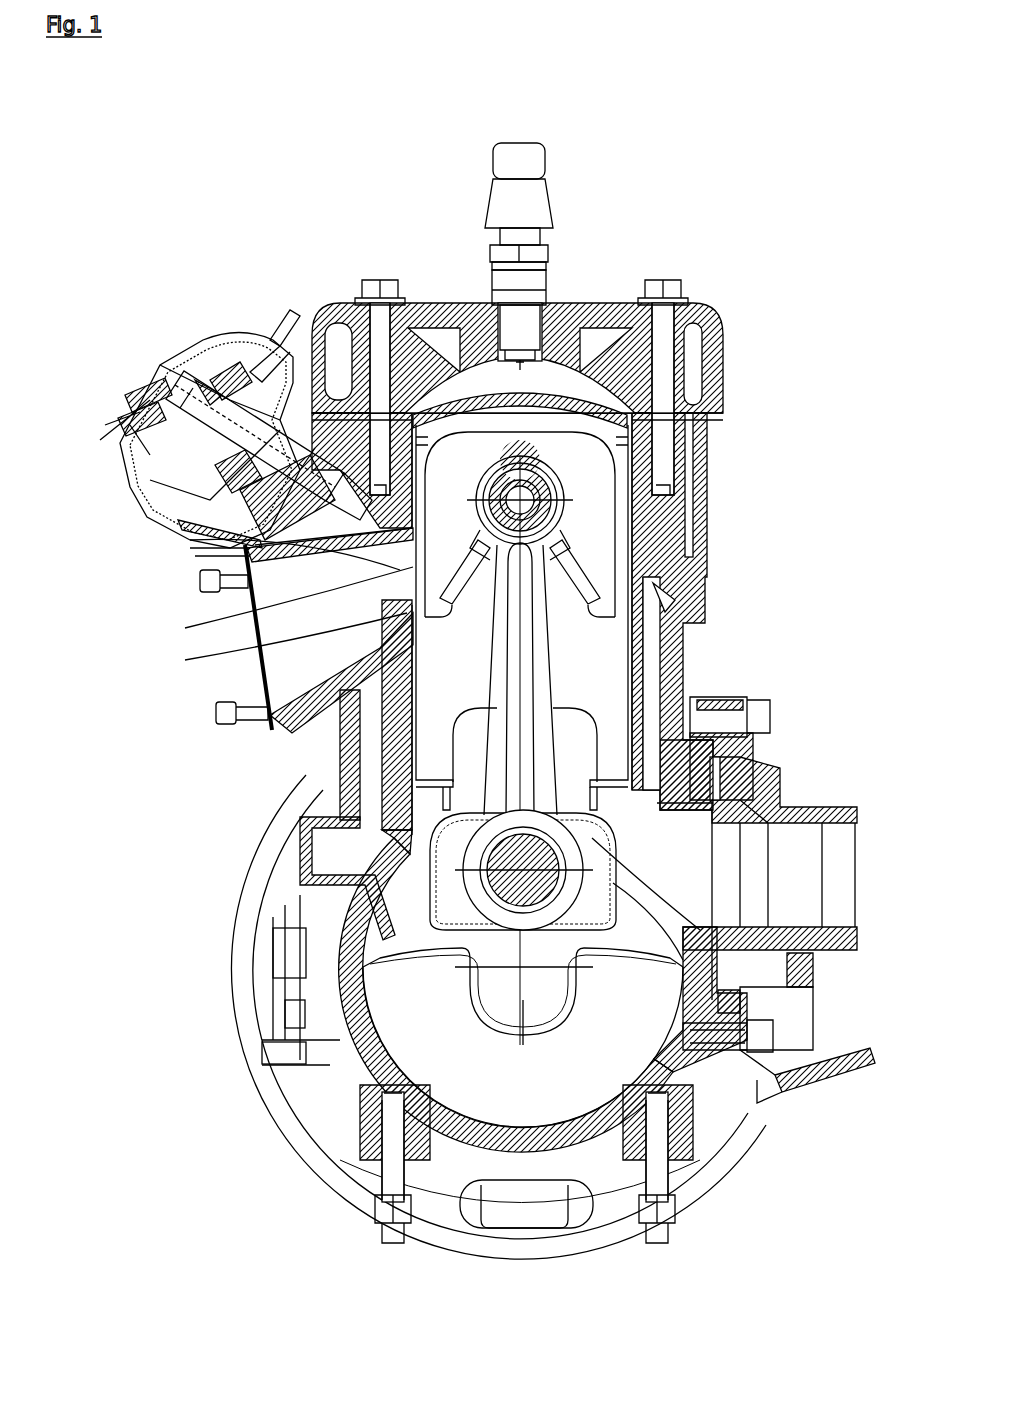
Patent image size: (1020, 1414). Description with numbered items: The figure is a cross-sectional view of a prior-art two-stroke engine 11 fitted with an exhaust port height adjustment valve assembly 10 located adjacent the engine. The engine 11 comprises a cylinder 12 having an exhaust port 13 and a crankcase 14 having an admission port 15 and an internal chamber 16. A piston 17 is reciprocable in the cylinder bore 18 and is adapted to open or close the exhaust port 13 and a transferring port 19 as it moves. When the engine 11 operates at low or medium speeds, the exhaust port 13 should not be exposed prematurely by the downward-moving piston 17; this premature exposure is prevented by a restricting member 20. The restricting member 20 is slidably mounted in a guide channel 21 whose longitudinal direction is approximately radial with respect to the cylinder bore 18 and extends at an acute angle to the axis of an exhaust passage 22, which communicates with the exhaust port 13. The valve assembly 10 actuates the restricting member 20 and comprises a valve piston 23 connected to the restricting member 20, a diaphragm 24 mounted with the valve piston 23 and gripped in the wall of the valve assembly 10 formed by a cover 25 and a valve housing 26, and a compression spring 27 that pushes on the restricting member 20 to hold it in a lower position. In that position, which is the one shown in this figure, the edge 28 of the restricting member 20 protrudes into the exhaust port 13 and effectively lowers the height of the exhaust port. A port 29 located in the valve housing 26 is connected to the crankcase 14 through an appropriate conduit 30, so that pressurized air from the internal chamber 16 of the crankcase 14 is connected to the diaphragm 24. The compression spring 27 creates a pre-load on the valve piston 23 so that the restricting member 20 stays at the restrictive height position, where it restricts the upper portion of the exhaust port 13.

The valve assembly 10 is at (260, 316).
The two-stroke engine 11 is at (608, 292).
The cylinder 12 is at (716, 497).
The exhaust port 13 is at (300, 620).
The crankcase 14 is at (246, 1096).
The admission port 15 is at (713, 878).
The internal chamber 16 is at (385, 917).
The piston 17 is at (640, 390).
The cylinder bore 18 is at (617, 702).
The transferring port 19 is at (707, 590).
The restricting member 20 is at (245, 547).
The guide channel 21 is at (247, 543).
The exhaust passage 22 is at (288, 686).
The valve piston 23 is at (207, 385).
The diaphragm 24 is at (183, 538).
The cover 25 is at (120, 484).
The valve housing 26 is at (240, 543).
The compression spring 27 is at (130, 425).
The edge 28 is at (297, 598).
The port 29 is at (293, 323).
The conduit 30 is at (840, 1054).